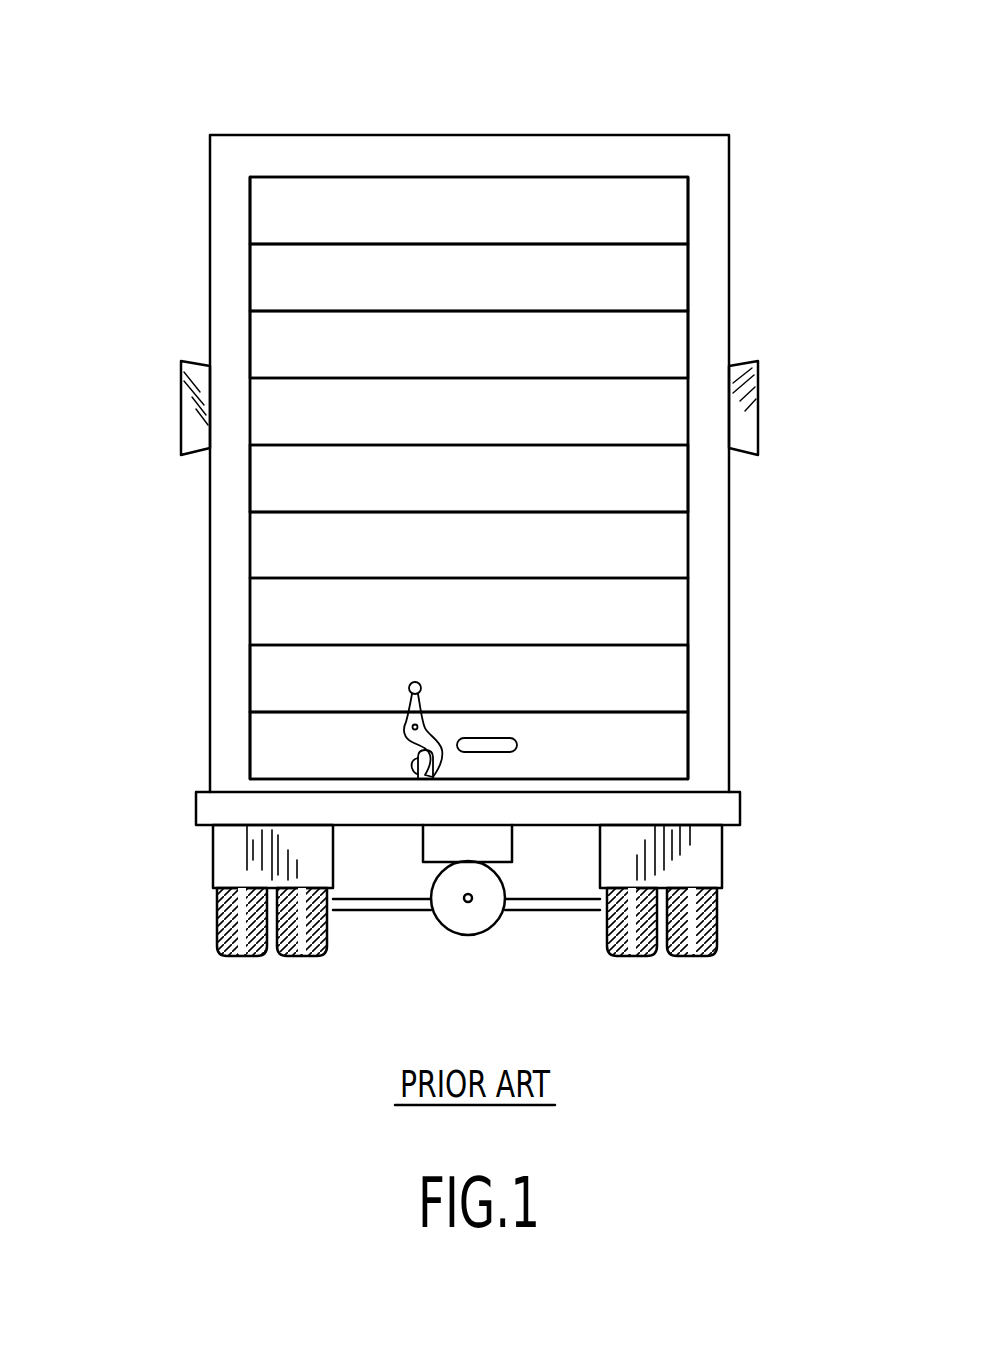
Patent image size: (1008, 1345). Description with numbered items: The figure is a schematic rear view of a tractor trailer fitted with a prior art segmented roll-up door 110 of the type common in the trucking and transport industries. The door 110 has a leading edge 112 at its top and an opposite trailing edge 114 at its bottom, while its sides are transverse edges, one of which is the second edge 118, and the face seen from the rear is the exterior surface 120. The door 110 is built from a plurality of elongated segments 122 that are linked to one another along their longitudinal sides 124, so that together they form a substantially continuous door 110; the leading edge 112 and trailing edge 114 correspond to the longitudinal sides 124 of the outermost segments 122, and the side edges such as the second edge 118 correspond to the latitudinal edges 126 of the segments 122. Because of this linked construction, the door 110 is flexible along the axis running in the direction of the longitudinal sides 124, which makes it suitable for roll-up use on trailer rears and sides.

The segmented roll-up door 110 is at (367, 792).
The leading edge 112 is at (498, 187).
The trailing edge 114 is at (610, 770).
The second edge 118 is at (270, 490).
The exterior surface 120 is at (385, 273).
The elongated segments 122 is at (267, 207).
The longitudinal sides 124 is at (660, 515).
The latitudinal edges 126 is at (250, 552).